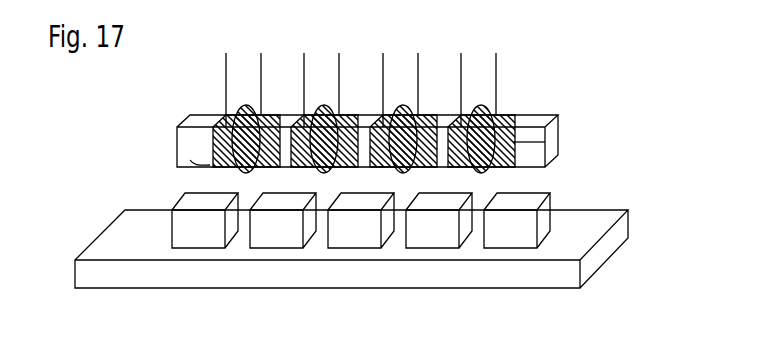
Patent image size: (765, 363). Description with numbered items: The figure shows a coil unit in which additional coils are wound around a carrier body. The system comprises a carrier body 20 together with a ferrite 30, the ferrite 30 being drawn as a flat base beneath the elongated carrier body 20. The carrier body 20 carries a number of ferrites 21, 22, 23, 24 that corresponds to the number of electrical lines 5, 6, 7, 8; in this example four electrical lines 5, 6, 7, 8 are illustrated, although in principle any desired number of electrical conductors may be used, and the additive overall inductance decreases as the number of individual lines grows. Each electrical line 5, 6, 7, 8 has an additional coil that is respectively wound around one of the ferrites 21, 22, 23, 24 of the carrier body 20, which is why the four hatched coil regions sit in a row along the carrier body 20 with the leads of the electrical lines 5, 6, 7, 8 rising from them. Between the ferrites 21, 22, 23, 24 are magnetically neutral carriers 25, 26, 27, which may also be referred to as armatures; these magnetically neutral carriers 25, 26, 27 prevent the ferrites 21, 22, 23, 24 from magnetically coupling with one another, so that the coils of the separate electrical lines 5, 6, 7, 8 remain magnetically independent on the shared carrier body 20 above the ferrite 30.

The electrical line 5 is at (261, 72).
The electrical line 6 is at (339, 75).
The electrical line 7 is at (417, 72).
The electrical line 8 is at (495, 68).
The carrier body 20 is at (540, 117).
The ferrite 21 is at (545, 142).
The ferrite 24 is at (190, 160).
The ferrite 22 is at (397, 170).
The ferrite 23 is at (313, 170).
The magnetically neutral carrier 25 is at (440, 170).
The magnetically neutral carrier 26 is at (358, 170).
The magnetically neutral carrier 27 is at (282, 170).
The ferrite 30 is at (625, 223).